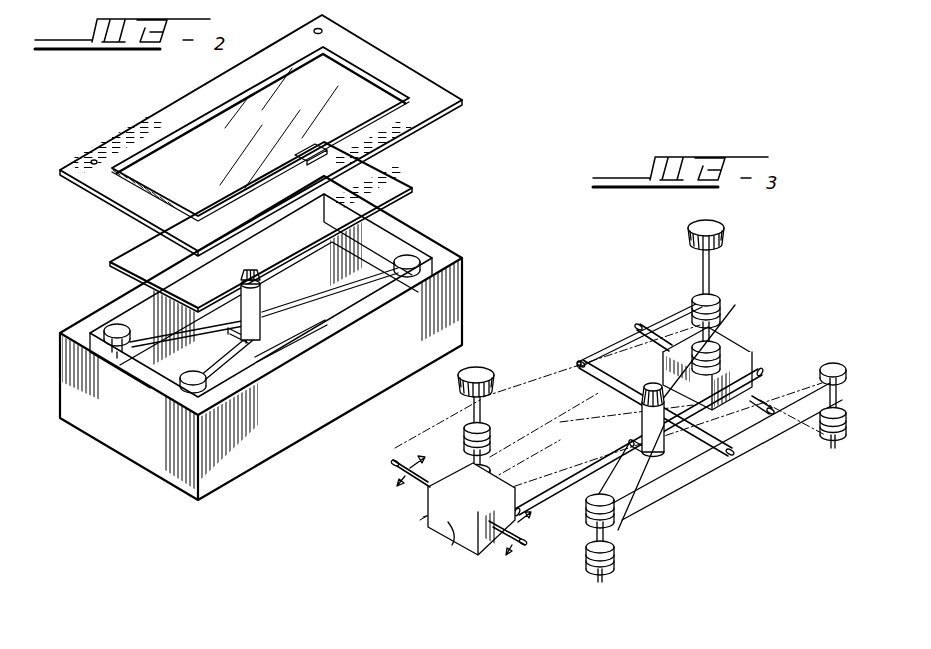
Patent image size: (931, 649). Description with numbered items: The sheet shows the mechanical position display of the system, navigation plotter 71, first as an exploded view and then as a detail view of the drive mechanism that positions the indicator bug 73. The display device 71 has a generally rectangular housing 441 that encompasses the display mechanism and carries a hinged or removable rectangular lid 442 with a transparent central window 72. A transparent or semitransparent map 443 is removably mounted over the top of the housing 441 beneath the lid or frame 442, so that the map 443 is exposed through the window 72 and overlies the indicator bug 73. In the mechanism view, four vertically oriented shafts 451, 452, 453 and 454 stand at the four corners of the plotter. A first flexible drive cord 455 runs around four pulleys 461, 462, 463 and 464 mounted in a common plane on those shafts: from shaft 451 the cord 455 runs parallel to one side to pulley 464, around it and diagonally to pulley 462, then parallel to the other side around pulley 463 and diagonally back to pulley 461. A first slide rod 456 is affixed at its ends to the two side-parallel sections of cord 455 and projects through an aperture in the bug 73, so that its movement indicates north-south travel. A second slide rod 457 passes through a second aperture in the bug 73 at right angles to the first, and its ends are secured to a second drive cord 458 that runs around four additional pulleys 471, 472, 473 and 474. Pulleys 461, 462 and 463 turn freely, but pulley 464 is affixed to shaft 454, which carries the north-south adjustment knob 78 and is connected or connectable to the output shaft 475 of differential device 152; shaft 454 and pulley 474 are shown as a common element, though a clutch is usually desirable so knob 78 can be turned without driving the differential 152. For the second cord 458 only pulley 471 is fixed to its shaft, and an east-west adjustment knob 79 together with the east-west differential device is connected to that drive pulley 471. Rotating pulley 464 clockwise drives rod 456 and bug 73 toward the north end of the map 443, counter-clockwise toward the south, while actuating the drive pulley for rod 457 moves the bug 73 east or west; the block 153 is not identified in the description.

In FIG. 2, the navigation plotter 71 is at (78, 142).
In FIG. 2, the transparent central window 72 is at (190, 137).
In FIG. 2, the indicator bug 73 is at (252, 335).
In FIG. 3, the indicator bug 73 is at (668, 460).
In FIG. 3, the adjustment knob 78 is at (482, 368).
In FIG. 3, the east-west adjustment knob 79 is at (712, 224).
In FIG. 3, the differential device 152 is at (453, 524).
In FIG. 3, the bearing block 153 is at (731, 350).
In FIG. 2, the housing 441 is at (127, 447).
In FIG. 2, the lid 442 is at (384, 60).
In FIG. 2, the map 443 is at (398, 186).
In FIG. 3, the shaft 451 is at (712, 262).
In FIG. 3, the shaft 452 is at (829, 448).
In FIG. 3, the shaft 453 is at (591, 579).
In FIG. 3, the shaft 454 is at (482, 404).
In FIG. 3, the first flexible drive cord 455 is at (580, 358).
In FIG. 3, the first slide rod 456 is at (606, 364).
In FIG. 3, the second slide rod 457 is at (578, 442).
In FIG. 3, the second drive cord 458 is at (577, 523).
In FIG. 3, the pulley 461 is at (701, 296).
In FIG. 2, the pulley 462 is at (442, 253).
In FIG. 3, the pulley 462 is at (822, 363).
In FIG. 2, the pulley 463 is at (214, 384).
In FIG. 3, the pulley 463 is at (622, 515).
In FIG. 2, the pulley 464 is at (114, 328).
In FIG. 3, the pulley 464 is at (487, 417).
In FIG. 3, the pulley 471 is at (722, 326).
In FIG. 3, the pulley 472 is at (841, 452).
In FIG. 3, the pulley 473 is at (611, 571).
In FIG. 3, the pulley 474 is at (491, 461).
In FIG. 3, the output shaft 475 is at (391, 540).